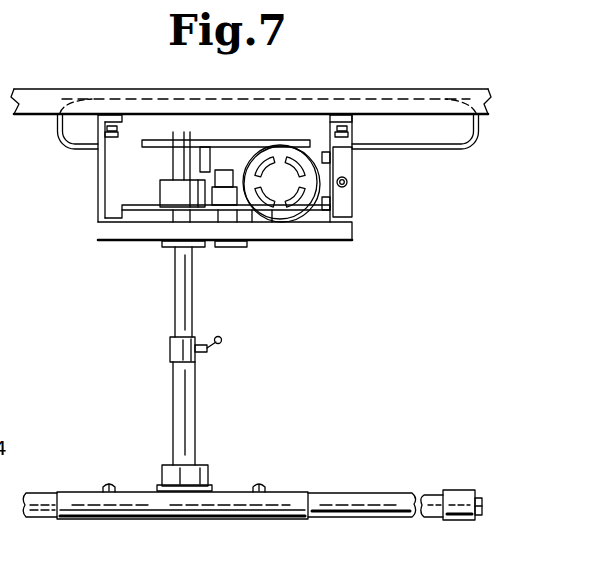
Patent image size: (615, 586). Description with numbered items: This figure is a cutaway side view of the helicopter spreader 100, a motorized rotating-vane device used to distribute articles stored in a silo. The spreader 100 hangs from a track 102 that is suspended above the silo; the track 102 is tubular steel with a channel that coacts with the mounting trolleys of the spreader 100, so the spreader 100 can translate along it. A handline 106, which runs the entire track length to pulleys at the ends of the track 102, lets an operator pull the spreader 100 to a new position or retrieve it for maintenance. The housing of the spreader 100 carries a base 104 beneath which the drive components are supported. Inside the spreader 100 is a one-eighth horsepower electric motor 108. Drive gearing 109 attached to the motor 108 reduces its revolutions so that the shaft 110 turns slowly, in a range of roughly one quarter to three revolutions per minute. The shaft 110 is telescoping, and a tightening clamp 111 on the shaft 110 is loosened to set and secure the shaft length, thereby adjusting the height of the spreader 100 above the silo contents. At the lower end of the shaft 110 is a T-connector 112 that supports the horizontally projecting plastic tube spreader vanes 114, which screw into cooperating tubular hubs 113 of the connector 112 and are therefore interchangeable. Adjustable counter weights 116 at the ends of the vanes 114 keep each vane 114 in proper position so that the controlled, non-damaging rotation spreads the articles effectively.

The helicopter spreader 100 is at (256, 200).
The track 102 is at (43, 89).
The base plate 104 is at (130, 243).
The handline 106 is at (445, 150).
The electric motor 108 is at (283, 218).
The drive gearing 109 is at (134, 154).
The shaft 110 is at (195, 377).
The tightening clamp 111 is at (196, 338).
The T-connector 112 is at (107, 485).
The tubular hubs 113 is at (290, 492).
The plastic tube spreader vanes 114 is at (33, 492).
The counter weights 116 is at (458, 490).